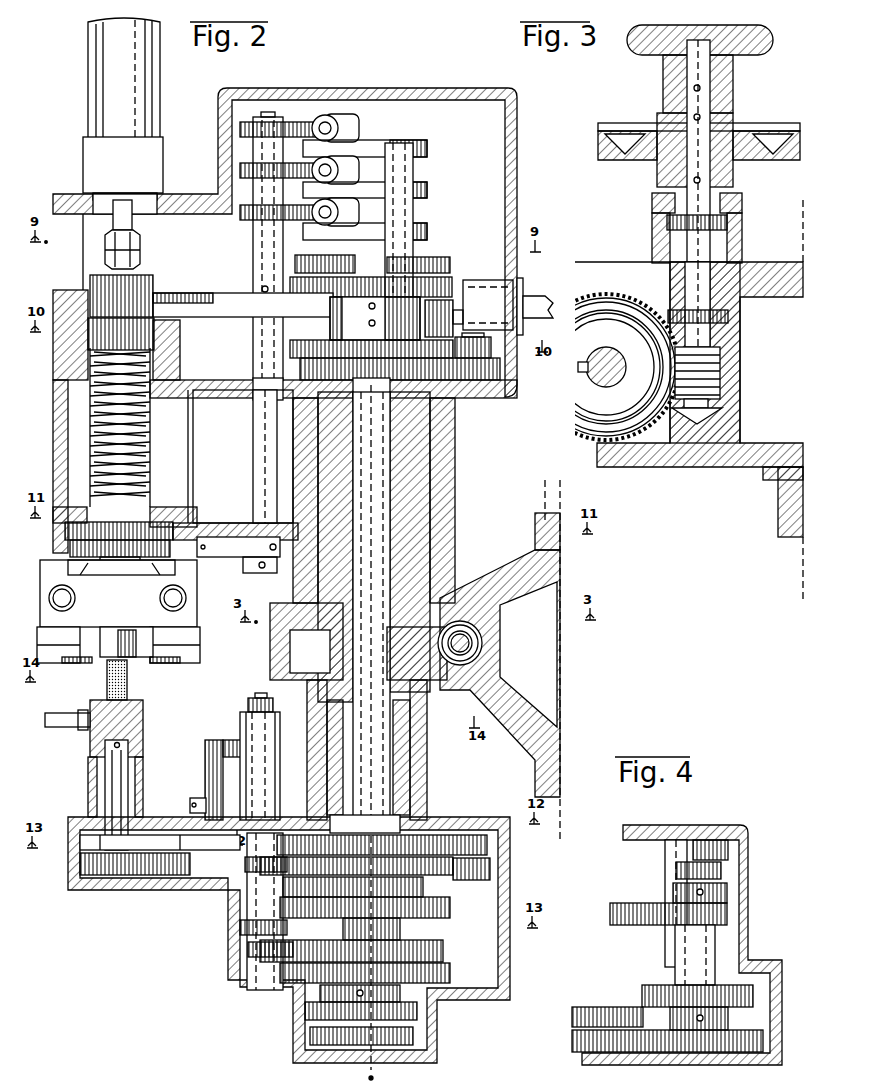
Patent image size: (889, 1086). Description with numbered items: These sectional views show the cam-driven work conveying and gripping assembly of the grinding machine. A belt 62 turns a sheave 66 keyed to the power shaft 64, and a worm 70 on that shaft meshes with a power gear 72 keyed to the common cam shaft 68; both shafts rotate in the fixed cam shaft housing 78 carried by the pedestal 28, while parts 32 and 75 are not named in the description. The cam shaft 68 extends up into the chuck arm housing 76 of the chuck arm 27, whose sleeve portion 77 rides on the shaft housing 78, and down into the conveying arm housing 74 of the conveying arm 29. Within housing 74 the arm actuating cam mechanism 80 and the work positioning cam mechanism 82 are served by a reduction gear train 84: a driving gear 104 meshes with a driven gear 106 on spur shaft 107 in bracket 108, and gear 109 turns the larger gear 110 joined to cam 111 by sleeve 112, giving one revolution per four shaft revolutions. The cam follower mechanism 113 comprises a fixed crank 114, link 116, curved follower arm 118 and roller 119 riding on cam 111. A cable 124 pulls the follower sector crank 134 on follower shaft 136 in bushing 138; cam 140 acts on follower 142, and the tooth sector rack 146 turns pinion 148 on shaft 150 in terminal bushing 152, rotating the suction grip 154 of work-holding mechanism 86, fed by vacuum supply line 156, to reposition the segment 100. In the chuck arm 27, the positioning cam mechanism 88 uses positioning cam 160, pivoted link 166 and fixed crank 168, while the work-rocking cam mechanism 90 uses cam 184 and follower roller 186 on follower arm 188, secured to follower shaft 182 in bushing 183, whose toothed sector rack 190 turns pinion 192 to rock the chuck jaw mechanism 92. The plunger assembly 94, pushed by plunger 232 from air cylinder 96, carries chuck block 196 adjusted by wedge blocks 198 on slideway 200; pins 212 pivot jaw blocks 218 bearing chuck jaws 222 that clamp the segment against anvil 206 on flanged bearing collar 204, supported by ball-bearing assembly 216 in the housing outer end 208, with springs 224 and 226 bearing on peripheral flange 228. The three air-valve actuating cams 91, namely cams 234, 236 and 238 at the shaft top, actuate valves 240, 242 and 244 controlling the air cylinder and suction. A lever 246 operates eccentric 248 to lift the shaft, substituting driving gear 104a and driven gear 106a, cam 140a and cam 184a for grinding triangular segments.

In FIG. 2, the chuck arm 27 is at (68, 170).
In FIG. 2, the pedestal 28 is at (562, 688).
In FIG. 3, the pedestal 28 is at (798, 567).
In FIG. 2, the conveying arm 29 is at (110, 970).
In FIG. 4, the conveying arm 29 is at (748, 812).
In FIG. 2, the flange 32 is at (548, 513).
In FIG. 3, the flange 32 is at (778, 517).
In FIG. 3, the belt 62 is at (600, 140).
In FIG. 2, the power shaft 64 is at (480, 635).
In FIG. 3, the power shaft 64 is at (690, 243).
In FIG. 3, the sheave 66 is at (652, 125).
In FIG. 2, the common cam shaft 68 is at (372, 513).
In FIG. 3, the common cam shaft 68 is at (600, 375).
In FIG. 2, the worm 70 is at (470, 650).
In FIG. 3, the worm 70 is at (720, 368).
In FIG. 2, the power gear 72 is at (422, 650).
In FIG. 3, the power gear 72 is at (655, 412).
In FIG. 2, the conveying arm housing 74 is at (510, 970).
In FIG. 4, the conveying arm housing 74 is at (638, 1065).
In FIG. 2, the housing wall 75 is at (427, 770).
In FIG. 4, the housing wall 75 is at (645, 826).
In FIG. 2, the chuck arm housing 76 is at (445, 95).
In FIG. 2, the sleeve portion 77 is at (455, 455).
In FIG. 2, the cam shaft housing member 78 is at (410, 485).
In FIG. 3, the cam shaft housing member 78 is at (712, 452).
In FIG. 2, the conveying arm actuating cam mechanism 80 is at (448, 885).
In FIG. 2, the work positioning cam mechanism 82 is at (450, 955).
In FIG. 2, the reduction gear train 84 is at (298, 1037).
In FIG. 4, the reduction gear train 84 is at (630, 995).
In FIG. 2, the work-holding mechanism 86 is at (78, 750).
In FIG. 2, the chuck arm positioning cam mechanism 88 is at (325, 335).
In FIG. 2, the work-rocking cam mechanism 90 is at (460, 262).
In FIG. 2, the air-valve actuating cams 91 is at (455, 140).
In FIG. 2, the chuck jaw mechanism 92 is at (205, 650).
In FIG. 2, the plunger assembly 94 is at (152, 430).
In FIG. 2, the air cylinder 96 is at (143, 72).
In FIG. 2, the segment 100 is at (140, 648).
In FIG. 2, the driving gear 104 is at (413, 1036).
In FIG. 4, the driving gear 104 is at (572, 1040).
In FIG. 2, the driving gear 104a is at (417, 1011).
In FIG. 4, the driving gear 104a is at (572, 1017).
In FIG. 4, the driven gear 106 is at (755, 1042).
In FIG. 4, the driven gear 106a is at (735, 995).
In FIG. 4, the spur shaft 107 is at (675, 962).
In FIG. 4, the bracket 108 is at (665, 853).
In FIG. 4, the gear 109 is at (727, 915).
In FIG. 2, the larger gear 110 is at (450, 908).
In FIG. 4, the larger gear 110 is at (610, 918).
In FIG. 2, the cam 111 is at (356, 866).
In FIG. 2, the sleeve 112 is at (353, 887).
In FIG. 2, the cam follower mechanism 113 is at (433, 838).
In FIG. 2, the fixed crank 114 is at (245, 850).
In FIG. 2, the link 116 is at (247, 912).
In FIG. 2, the curved follower arm 118 is at (382, 845).
In FIG. 2, the follower roller 119 is at (490, 868).
In FIG. 2, the cable 124 is at (190, 800).
In FIG. 2, the follower sector crank 134 is at (205, 768).
In FIG. 2, the follower shaft 136 is at (248, 692).
In FIG. 2, the bushing 138 is at (245, 748).
In FIG. 2, the cam 140 is at (326, 948).
In FIG. 2, the cam 140a is at (280, 972).
In FIG. 2, the follower 142 is at (248, 948).
In FIG. 2, the tooth sector rack 146 is at (178, 876).
In FIG. 2, the pinion 148 is at (95, 876).
In FIG. 2, the shaft 150 is at (128, 843).
In FIG. 2, the terminal bushing 152 is at (90, 790).
In FIG. 2, the suction grip 154 is at (107, 685).
In FIG. 2, the vacuum supply line 156 is at (58, 728).
In FIG. 2, the positioning cam 160 is at (371, 349).
In FIG. 2, the pivoted link 166 is at (490, 348).
In FIG. 2, the fixed crank 168 is at (448, 395).
In FIG. 2, the follower shaft 182 is at (262, 428).
In FIG. 2, the bushing 183 is at (253, 340).
In FIG. 2, the cam 184 is at (410, 270).
In FIG. 2, the cam 184a is at (440, 285).
In FIG. 2, the follower roller 186 is at (326, 262).
In FIG. 2, the follower arm 188 is at (238, 293).
In FIG. 2, the toothed sector rack 190 is at (157, 295).
In FIG. 2, the pinion 192 is at (153, 290).
In FIG. 2, the chuck block 196 is at (185, 578).
In FIG. 2, the adjustable wedge blocks 198 is at (153, 588).
In FIG. 2, the slideway 200 is at (120, 575).
In FIG. 2, the flanged bearing collar 204 is at (128, 550).
In FIG. 2, the anvil 206 is at (108, 640).
In FIG. 2, the outer end of the chuck arm housing 208 is at (60, 505).
In FIG. 2, the pins 212 is at (176, 600).
In FIG. 2, the ball-bearing assembly 216 is at (160, 505).
In FIG. 2, the jaw blocks 218 is at (60, 627).
In FIG. 2, the chuck jaws 222 is at (145, 670).
In FIG. 2, the helical coil spring 224 is at (96, 496).
In FIG. 2, the helical coil spring 226 is at (93, 410).
In FIG. 2, the peripheral flange 228 is at (95, 470).
In FIG. 2, the plunger 232 is at (140, 253).
In FIG. 2, the cam 234 is at (440, 220).
In FIG. 2, the cam 236 is at (440, 177).
In FIG. 2, the cam 238 is at (440, 132).
In FIG. 2, the valve 240 is at (355, 210).
In FIG. 2, the valve 242 is at (355, 168).
In FIG. 2, the valve 244 is at (355, 125).
In FIG. 2, the lever 246 is at (540, 296).
In FIG. 2, the eccentric 248 is at (438, 318).